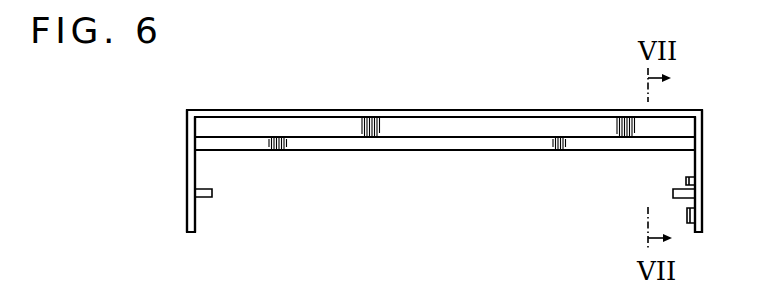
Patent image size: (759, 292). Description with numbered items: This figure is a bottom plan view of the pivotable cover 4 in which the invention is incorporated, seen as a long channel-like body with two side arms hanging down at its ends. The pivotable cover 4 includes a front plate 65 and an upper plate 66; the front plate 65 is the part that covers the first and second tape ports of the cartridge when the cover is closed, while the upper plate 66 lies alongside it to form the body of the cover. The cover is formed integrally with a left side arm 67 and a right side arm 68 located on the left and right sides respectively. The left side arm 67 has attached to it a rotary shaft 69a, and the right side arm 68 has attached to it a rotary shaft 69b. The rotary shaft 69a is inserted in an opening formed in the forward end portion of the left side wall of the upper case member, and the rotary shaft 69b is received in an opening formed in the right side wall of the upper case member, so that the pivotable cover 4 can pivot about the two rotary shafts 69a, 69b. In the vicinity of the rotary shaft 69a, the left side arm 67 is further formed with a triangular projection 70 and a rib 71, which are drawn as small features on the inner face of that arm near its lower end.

The pivotable cover 4 is at (295, 110).
The front plate 65 is at (398, 110).
The upper plate 66 is at (423, 151).
The left side arm 67 is at (702, 177).
The right side arm 68 is at (195, 207).
The rotary shaft 69a is at (673, 193).
The rotary shaft 69b is at (212, 188).
The triangular projection 70 is at (689, 224).
The rib 71 is at (686, 180).